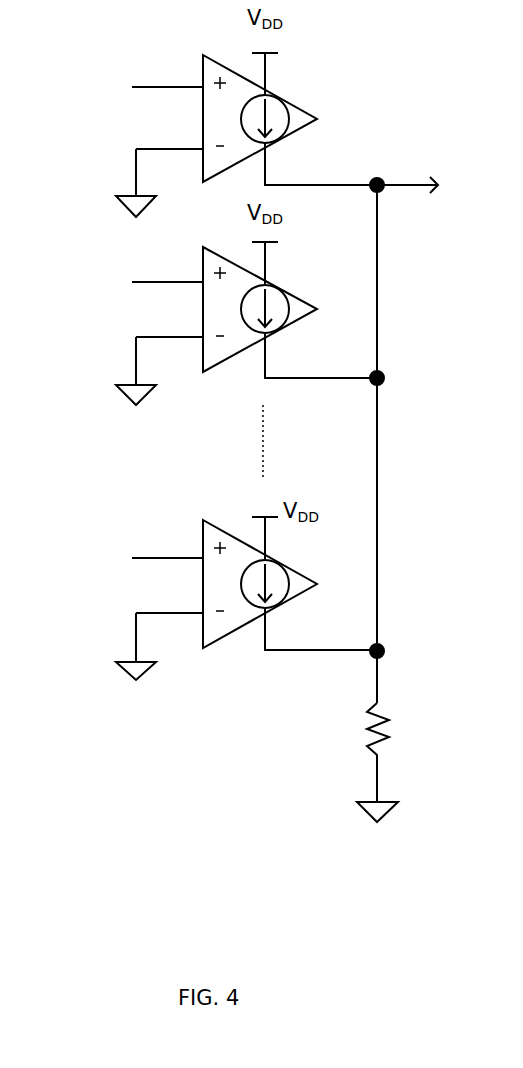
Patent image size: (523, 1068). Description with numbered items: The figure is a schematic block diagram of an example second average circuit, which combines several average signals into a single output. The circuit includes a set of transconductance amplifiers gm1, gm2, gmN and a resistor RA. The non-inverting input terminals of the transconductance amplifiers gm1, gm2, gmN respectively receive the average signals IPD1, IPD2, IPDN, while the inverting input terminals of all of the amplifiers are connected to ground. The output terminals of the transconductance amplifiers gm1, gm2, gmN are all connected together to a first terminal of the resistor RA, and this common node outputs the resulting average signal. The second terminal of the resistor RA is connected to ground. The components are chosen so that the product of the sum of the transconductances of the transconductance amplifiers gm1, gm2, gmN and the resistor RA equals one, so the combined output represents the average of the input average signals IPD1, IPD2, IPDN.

The transconductance amplifier gm1 is at (246, 135).
The transconductance amplifier gm2 is at (246, 323).
The transconductance amplifier gmN is at (246, 598).
The average signal IPD1 is at (70, 92).
The average signal IPD2 is at (72, 286).
The average signal IPDN is at (71, 562).
The resistor RA is at (362, 762).